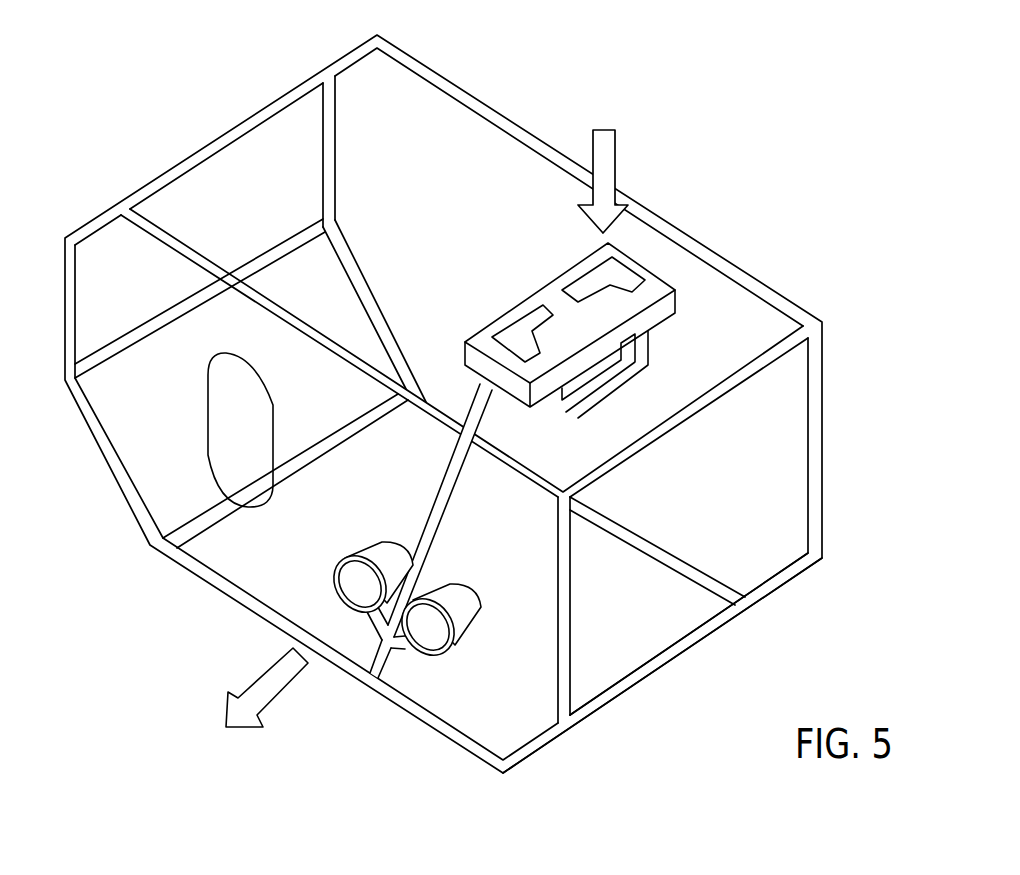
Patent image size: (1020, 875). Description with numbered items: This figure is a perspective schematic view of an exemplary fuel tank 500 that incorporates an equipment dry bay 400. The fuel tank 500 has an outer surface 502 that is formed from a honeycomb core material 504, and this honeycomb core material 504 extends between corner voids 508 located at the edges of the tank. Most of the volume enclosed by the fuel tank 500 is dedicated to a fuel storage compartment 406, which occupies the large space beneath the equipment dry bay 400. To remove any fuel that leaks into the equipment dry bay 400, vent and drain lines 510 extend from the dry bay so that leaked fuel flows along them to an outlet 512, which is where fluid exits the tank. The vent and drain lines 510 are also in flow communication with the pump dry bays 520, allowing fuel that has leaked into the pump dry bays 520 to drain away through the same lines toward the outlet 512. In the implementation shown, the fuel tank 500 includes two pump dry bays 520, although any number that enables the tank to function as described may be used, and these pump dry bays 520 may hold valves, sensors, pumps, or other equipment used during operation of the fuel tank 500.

The fuel tank 500 is at (530, 72).
The corner voids 508 is at (187, 160).
The outer surface 502 is at (603, 617).
The honeycomb core material 504 is at (677, 618).
The fuel storage compartment 406 is at (253, 460).
The equipment dry bay 400 is at (607, 306).
The vent and drain lines 510 is at (432, 553).
The pump dry bays 520 is at (353, 581).
The outlet 512 is at (278, 715).